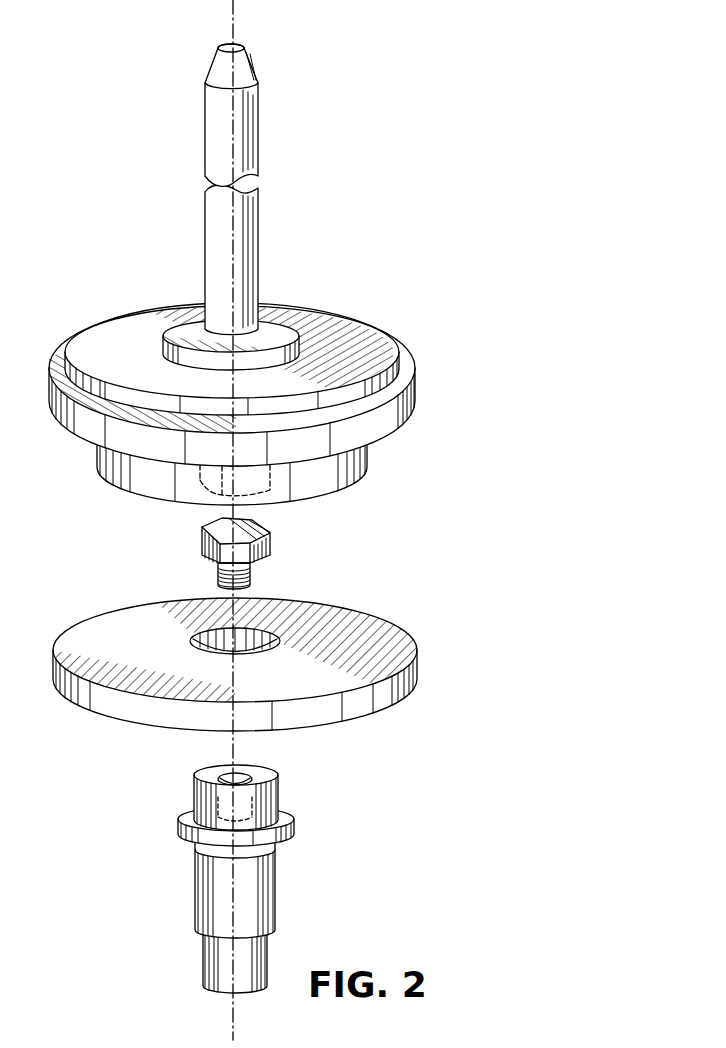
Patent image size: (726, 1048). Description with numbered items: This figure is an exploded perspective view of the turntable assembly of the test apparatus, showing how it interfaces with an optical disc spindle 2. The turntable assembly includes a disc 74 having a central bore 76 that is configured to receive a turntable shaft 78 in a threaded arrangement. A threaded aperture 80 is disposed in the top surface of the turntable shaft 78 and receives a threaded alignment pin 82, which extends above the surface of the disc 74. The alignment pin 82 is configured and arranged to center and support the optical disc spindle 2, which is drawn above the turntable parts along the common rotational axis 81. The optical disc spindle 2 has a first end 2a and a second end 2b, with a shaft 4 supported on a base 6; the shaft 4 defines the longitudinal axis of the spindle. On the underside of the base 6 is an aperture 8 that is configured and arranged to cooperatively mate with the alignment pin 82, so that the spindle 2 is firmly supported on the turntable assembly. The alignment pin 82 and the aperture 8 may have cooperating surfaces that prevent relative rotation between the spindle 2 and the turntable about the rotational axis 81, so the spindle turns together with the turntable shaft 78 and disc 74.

The optical disc spindle 2 is at (166, 177).
The first end 2a is at (243, 46).
The second end 2b is at (314, 501).
The shaft 4 is at (243, 176).
The base 6 is at (337, 314).
The aperture 8 is at (208, 461).
The disc 74 is at (235, 646).
The central bore 76 is at (245, 645).
The turntable shaft 78 is at (249, 863).
The threaded aperture 80 is at (247, 763).
The rotational axis 81 is at (238, 1024).
The alignment pin 82 is at (272, 553).